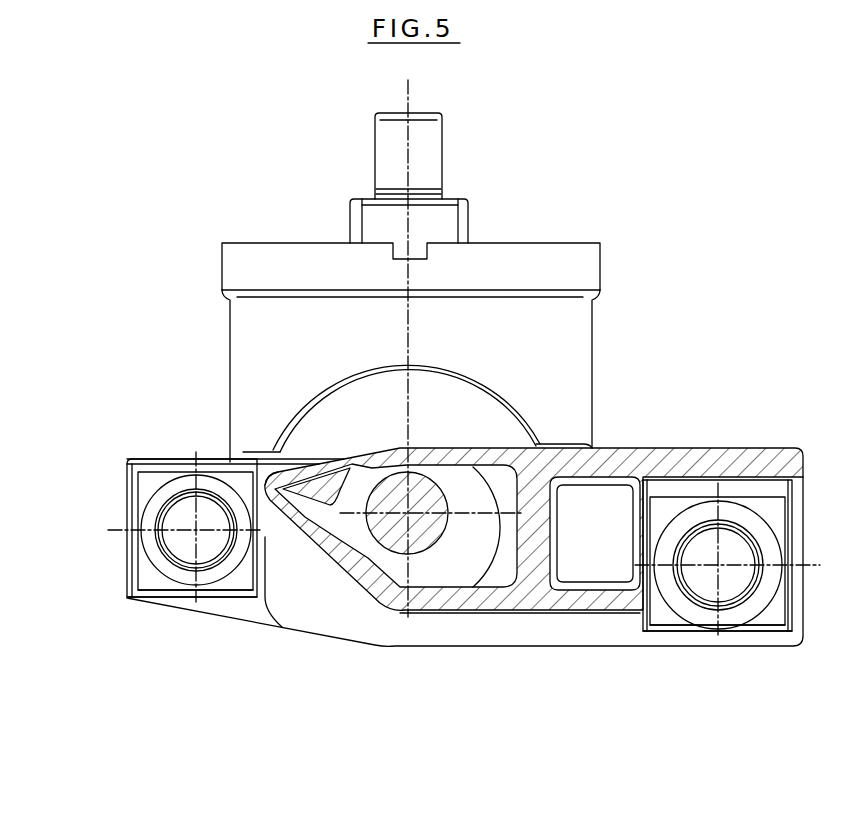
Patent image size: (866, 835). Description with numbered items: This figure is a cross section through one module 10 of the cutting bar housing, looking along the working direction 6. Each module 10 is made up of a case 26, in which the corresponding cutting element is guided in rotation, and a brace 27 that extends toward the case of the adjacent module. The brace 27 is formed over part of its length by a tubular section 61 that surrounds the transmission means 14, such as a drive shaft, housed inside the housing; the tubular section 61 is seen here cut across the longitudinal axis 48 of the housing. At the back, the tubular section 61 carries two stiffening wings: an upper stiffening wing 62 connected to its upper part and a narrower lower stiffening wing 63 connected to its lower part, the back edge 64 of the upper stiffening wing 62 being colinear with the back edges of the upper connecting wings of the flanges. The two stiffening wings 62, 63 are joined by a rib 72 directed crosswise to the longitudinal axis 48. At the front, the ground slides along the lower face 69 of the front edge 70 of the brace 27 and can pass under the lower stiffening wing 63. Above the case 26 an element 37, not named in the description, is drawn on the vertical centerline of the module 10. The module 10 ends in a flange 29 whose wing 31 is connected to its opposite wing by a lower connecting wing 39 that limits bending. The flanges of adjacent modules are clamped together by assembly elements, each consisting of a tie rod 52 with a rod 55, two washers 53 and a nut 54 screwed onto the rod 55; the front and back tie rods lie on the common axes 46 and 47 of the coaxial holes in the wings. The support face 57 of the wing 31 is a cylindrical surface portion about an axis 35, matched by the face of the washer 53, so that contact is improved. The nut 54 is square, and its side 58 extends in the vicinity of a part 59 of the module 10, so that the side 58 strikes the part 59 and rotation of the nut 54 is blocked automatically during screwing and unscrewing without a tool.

The working direction 6 is at (48, 130).
The module 10 is at (696, 312).
The transmission means 14 is at (425, 535).
The case 26 is at (222, 330).
The brace 27 is at (446, 440).
The flange 29 is at (769, 655).
The wing 31 is at (163, 459).
The axis 35 is at (122, 530).
The threaded stud 37 is at (410, 84).
The connecting wing 39 is at (717, 640).
The common axis of the front holes 46 is at (190, 535).
The common axis of the back holes 47 is at (720, 567).
The longitudinal axis 48 is at (407, 520).
The tie rod 52 is at (207, 553).
The washer 53 is at (135, 593).
The nut 54 is at (147, 582).
The rod 55 is at (178, 515).
The support face 57 is at (268, 592).
The side of the nut 58 is at (633, 608).
The part of the module 59 is at (268, 535).
The tubular section 61 is at (452, 590).
The upper stiffening wing 62 is at (655, 457).
The lower stiffening wing 63 is at (563, 600).
The back edge 64 is at (805, 460).
The lower face 69 is at (380, 580).
The front edge 70 is at (237, 459).
The rib 72 is at (592, 528).